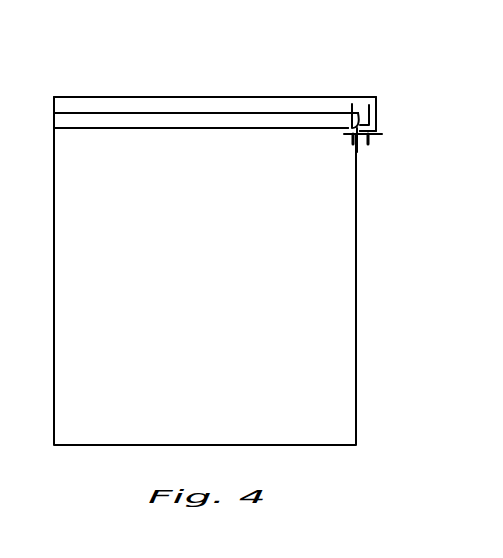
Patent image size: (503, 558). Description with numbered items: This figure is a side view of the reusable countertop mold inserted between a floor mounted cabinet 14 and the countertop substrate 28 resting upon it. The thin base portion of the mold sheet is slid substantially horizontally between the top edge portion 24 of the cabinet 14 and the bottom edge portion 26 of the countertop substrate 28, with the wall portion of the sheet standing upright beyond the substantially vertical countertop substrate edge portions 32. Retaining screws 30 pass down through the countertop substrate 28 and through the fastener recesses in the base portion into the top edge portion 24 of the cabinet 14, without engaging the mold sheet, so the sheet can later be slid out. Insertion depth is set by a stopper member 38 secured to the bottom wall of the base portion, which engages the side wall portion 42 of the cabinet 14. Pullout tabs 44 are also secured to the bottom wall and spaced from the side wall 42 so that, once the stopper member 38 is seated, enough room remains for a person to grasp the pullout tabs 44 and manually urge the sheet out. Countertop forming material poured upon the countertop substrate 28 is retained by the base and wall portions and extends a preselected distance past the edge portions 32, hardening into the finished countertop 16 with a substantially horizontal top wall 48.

The cabinet 14 is at (308, 388).
The countertop 16 is at (85, 99).
The top edge portion 24 is at (350, 134).
The bottom edge portion 26 is at (278, 128).
The countertop substrate 28 is at (125, 122).
The retaining screws 30 is at (352, 104).
The countertop substrate edge portions 32 is at (366, 97).
The stopper member 38 is at (357, 144).
The side wall portion 42 is at (356, 174).
The pullout tabs 44 is at (378, 134).
The top wall 48 is at (180, 97).